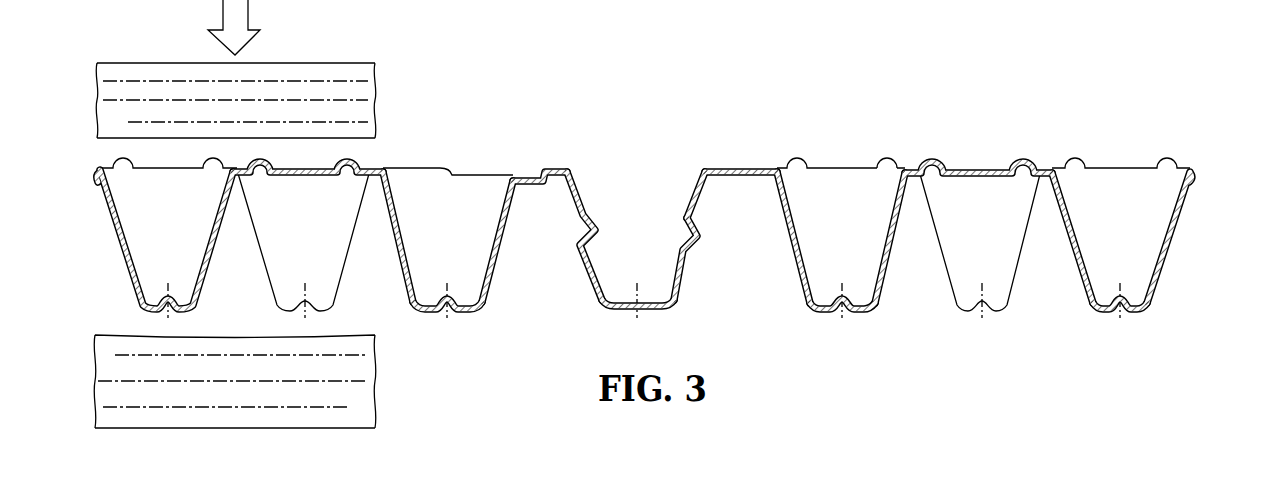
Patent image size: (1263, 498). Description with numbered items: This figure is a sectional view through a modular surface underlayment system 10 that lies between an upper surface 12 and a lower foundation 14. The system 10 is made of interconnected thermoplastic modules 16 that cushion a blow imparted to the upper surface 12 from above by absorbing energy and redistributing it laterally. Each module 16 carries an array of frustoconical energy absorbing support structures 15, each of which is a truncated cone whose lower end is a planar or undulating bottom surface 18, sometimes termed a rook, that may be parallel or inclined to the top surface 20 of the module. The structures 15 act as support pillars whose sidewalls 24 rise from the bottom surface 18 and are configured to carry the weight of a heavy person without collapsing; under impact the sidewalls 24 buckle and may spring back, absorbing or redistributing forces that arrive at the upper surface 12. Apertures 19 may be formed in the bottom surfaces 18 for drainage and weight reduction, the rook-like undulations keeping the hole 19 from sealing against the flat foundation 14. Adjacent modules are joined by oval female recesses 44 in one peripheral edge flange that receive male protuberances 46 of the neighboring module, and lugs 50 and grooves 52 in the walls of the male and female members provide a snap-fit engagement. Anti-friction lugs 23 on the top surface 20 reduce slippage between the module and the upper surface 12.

The modular surface underlayment system 10 is at (677, 244).
The upper surface 12 is at (375, 85).
The lower foundation 14 is at (375, 378).
The frustoconical energy absorbing support structure 15 is at (468, 309).
The thermoplastic module 16 is at (875, 242).
The bottom surface 18 is at (820, 310).
The aperture 19 is at (1118, 305).
The top surface 20 is at (322, 168).
The anti-friction lug 23 is at (893, 158).
The sidewall 24 is at (497, 253).
The oval female recess 44 is at (693, 272).
The male protuberance 46 is at (695, 195).
The lug 50 is at (693, 223).
The groove 52 is at (597, 226).